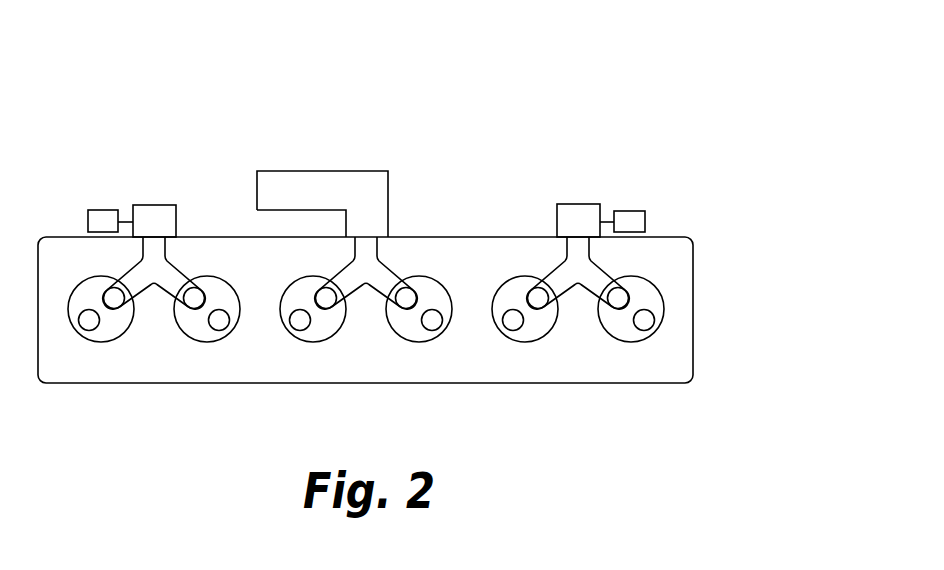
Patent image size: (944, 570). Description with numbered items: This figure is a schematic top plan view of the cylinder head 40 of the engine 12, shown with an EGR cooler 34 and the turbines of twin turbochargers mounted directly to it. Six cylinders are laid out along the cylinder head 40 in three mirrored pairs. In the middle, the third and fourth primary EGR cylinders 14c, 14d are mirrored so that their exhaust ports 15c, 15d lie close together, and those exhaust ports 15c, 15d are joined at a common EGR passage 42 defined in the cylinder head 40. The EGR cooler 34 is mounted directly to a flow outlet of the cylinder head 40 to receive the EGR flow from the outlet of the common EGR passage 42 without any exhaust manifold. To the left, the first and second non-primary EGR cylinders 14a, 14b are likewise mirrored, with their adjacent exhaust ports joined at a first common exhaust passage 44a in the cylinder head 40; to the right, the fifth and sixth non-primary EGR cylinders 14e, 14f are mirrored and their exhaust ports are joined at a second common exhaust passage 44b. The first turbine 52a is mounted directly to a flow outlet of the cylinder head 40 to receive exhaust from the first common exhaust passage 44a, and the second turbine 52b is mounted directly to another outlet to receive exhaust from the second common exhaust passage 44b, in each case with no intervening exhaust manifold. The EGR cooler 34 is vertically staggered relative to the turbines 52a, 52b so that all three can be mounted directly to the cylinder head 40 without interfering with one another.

The engine 12 is at (673, 80).
The first non-primary EGR cylinder 14a is at (83, 342).
The second non-primary EGR cylinder 14b is at (192, 342).
The third primary EGR cylinder 14c is at (327, 342).
The fourth primary EGR cylinder 14d is at (405, 342).
The fifth non-primary EGR cylinder 14e is at (543, 342).
The sixth non-primary EGR cylinder 14f is at (635, 342).
The exhaust port 15c is at (318, 293).
The exhaust port 15d is at (416, 298).
The EGR cooler 34 is at (330, 170).
The cylinder head 40 is at (693, 308).
The common EGR passage 42 is at (378, 247).
The first common exhaust passage 44a is at (168, 248).
The second common exhaust passage 44b is at (592, 245).
The first turbine 52a is at (152, 204).
The second turbine 52b is at (580, 203).